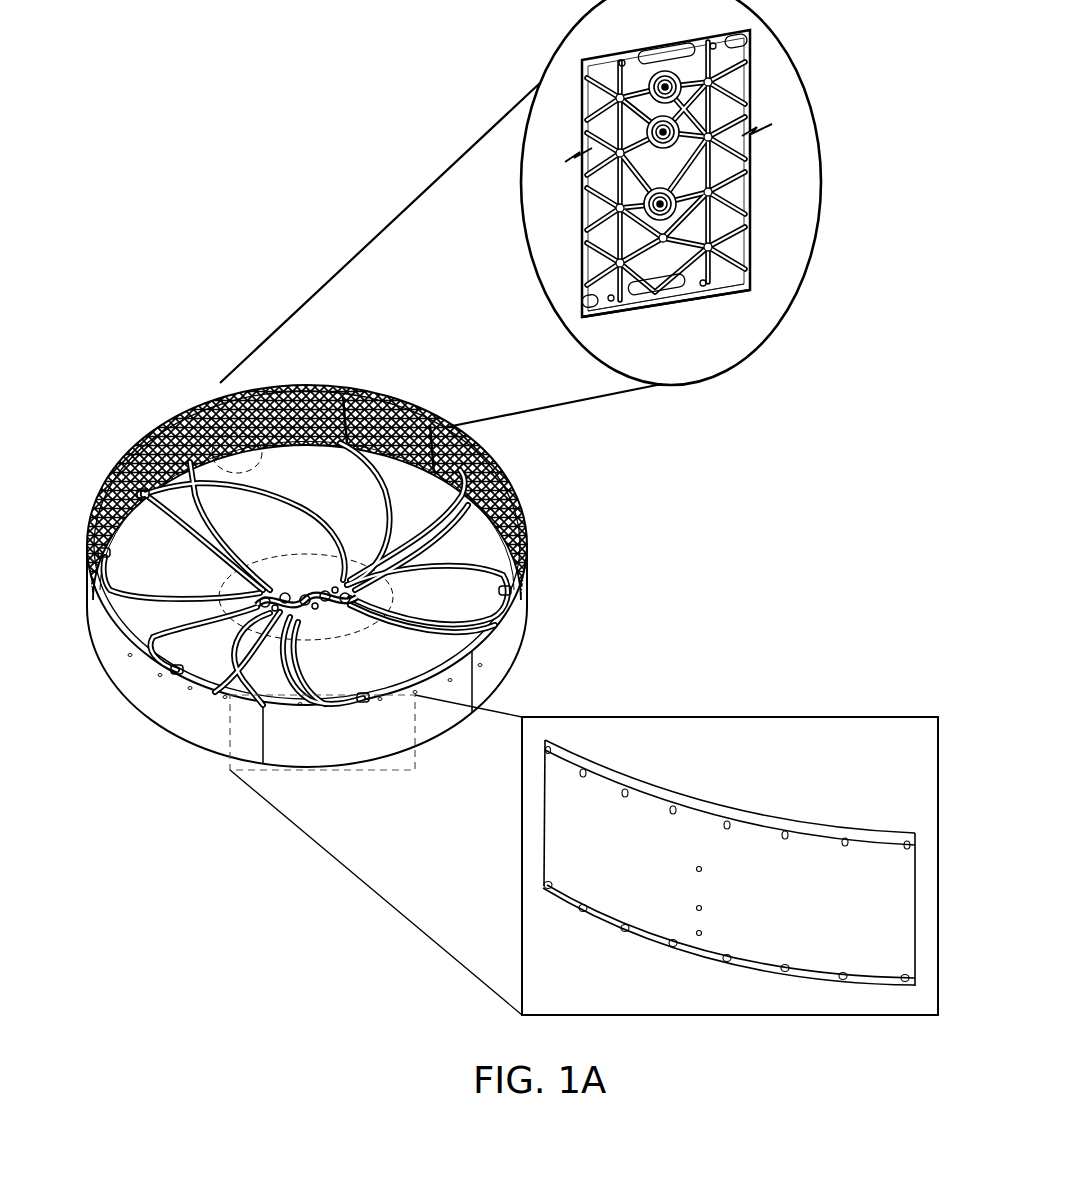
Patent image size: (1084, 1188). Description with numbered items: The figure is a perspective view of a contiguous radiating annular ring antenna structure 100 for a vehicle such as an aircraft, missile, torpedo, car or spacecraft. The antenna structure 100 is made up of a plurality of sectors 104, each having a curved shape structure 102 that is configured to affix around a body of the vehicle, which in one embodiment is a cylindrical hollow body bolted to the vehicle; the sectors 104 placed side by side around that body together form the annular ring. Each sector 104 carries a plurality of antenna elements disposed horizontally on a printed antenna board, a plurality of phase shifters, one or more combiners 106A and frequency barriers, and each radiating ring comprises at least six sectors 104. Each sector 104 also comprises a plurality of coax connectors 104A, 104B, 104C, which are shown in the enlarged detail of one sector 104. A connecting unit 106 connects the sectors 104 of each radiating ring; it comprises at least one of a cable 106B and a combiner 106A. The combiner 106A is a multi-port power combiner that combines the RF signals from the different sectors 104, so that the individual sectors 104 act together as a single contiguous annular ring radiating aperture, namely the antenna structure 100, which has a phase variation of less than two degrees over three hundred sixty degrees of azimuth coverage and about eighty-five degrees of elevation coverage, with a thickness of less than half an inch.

The contiguous radiating annular ring antenna structure 100 is at (243, 300).
The curved shape structure 102 is at (183, 403).
The sector 104 is at (362, 771).
The coax connector 104A is at (745, 78).
The coax connector 104B is at (745, 128).
The coax connector 104C is at (745, 200).
The connecting unit 106 is at (223, 588).
The combiner 106A is at (290, 612).
The cable 106B is at (143, 493).